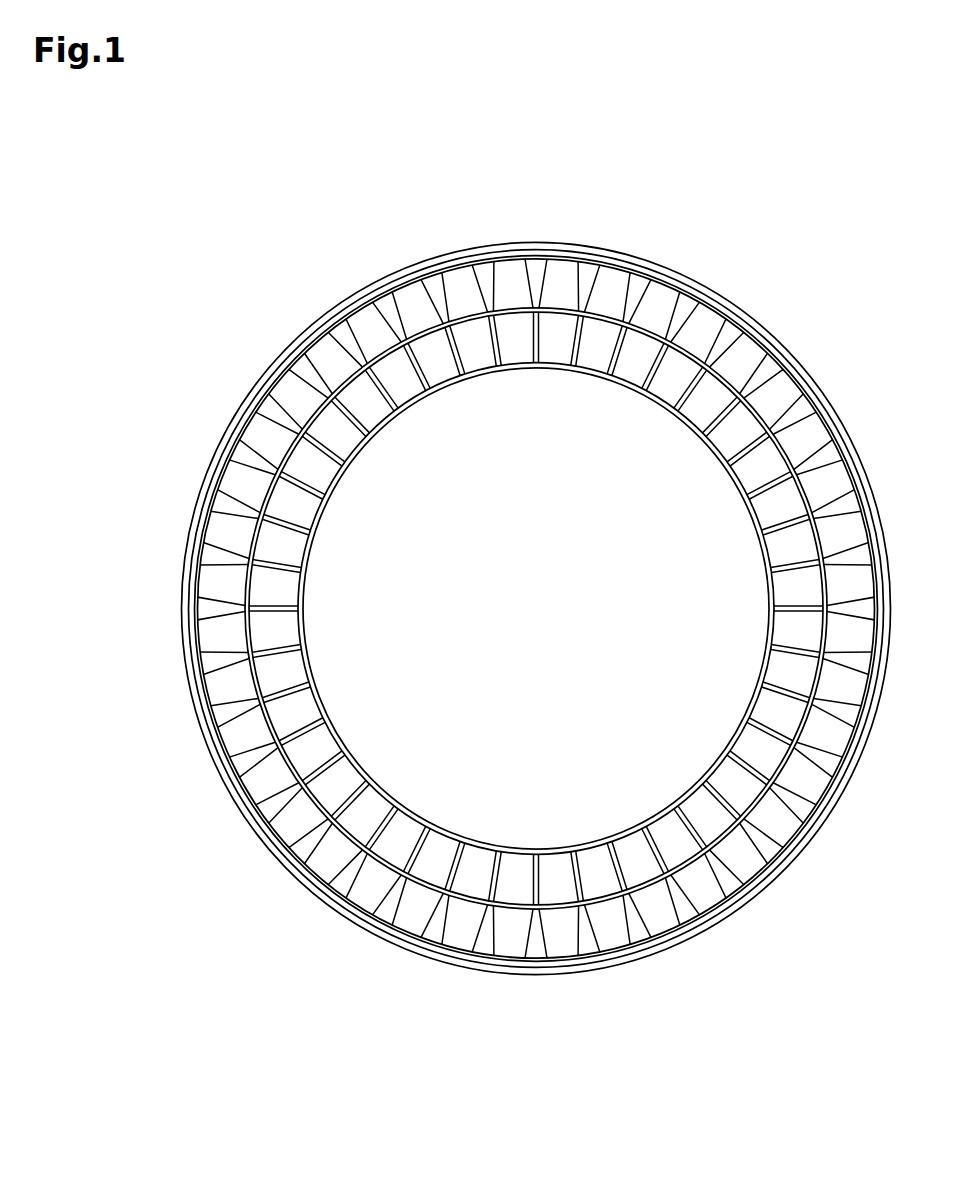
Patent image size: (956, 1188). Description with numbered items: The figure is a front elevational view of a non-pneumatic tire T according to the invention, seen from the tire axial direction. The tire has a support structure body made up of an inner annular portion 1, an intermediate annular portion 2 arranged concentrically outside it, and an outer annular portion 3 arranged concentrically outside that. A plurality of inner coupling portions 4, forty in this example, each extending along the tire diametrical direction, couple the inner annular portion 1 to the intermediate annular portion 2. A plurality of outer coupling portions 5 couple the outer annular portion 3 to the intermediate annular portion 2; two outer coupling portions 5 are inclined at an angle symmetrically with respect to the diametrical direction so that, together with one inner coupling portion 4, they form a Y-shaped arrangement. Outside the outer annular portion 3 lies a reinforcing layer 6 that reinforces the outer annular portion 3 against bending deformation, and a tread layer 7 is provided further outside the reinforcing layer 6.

The inner annular portion 1 is at (536, 609).
The intermediate annular portion 2 is at (536, 608).
The outer annular portion 3 is at (536, 609).
The inner coupling portion 4 is at (536, 608).
The outer coupling portion 5 is at (748, 494).
The reinforcing layer 6 is at (536, 609).
The tread layer 7 is at (536, 608).
The non-pneumatic tire T is at (833, 357).